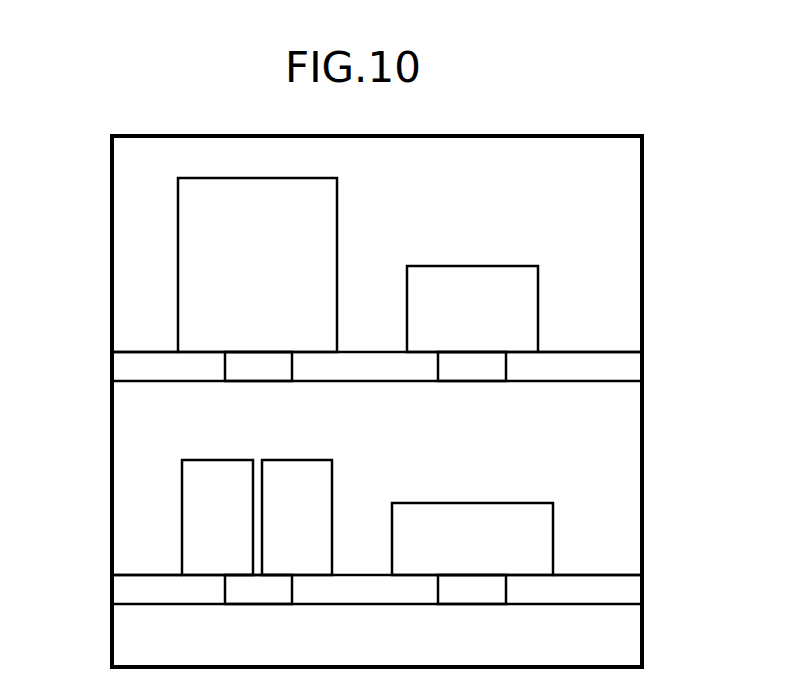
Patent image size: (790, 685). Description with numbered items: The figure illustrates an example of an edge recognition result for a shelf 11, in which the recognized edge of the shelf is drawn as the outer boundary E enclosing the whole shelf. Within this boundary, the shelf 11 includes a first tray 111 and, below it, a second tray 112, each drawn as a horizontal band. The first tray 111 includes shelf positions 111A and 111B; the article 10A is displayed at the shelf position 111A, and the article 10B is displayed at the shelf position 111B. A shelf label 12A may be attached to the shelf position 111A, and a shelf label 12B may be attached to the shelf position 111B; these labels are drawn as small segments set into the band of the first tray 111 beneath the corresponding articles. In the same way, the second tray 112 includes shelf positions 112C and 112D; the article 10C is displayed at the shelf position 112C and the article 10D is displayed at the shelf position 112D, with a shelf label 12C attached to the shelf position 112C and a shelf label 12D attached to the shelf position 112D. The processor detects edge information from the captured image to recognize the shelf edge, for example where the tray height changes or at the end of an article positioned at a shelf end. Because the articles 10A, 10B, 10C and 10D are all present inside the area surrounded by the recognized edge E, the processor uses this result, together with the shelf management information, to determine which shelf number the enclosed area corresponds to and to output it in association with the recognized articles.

The electronic apparatus E is at (111, 158).
The shelf 11 is at (643, 134).
The first tray 111 is at (626, 367).
The shelf position 111A is at (160, 351).
The shelf position 111B is at (632, 351).
The shelf label 12A is at (250, 371).
The shelf label 12B is at (474, 371).
The article 10A is at (204, 228).
The article 10B is at (523, 292).
The second tray 112 is at (626, 592).
The shelf position 112C is at (164, 575).
The shelf position 112D is at (630, 574).
The shelf label 12C is at (250, 594).
The shelf label 12D is at (474, 595).
The article 10C is at (276, 480).
The article 10D is at (538, 528).